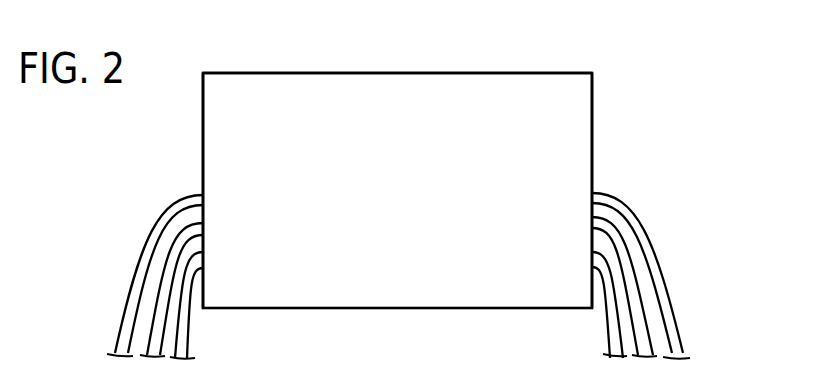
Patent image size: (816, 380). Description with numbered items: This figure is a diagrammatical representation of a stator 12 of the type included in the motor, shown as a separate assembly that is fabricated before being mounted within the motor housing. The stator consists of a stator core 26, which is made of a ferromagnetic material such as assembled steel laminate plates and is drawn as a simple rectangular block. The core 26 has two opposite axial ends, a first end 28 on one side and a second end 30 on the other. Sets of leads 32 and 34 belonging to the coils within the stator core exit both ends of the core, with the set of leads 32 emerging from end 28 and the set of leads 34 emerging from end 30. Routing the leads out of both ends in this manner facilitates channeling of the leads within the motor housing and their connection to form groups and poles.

The stator 12 is at (477, 72).
The stator core 26 is at (535, 90).
The axial end 28 is at (202, 108).
The axial end 30 is at (592, 115).
The set of leads 32 is at (142, 222).
The set of leads 34 is at (665, 245).